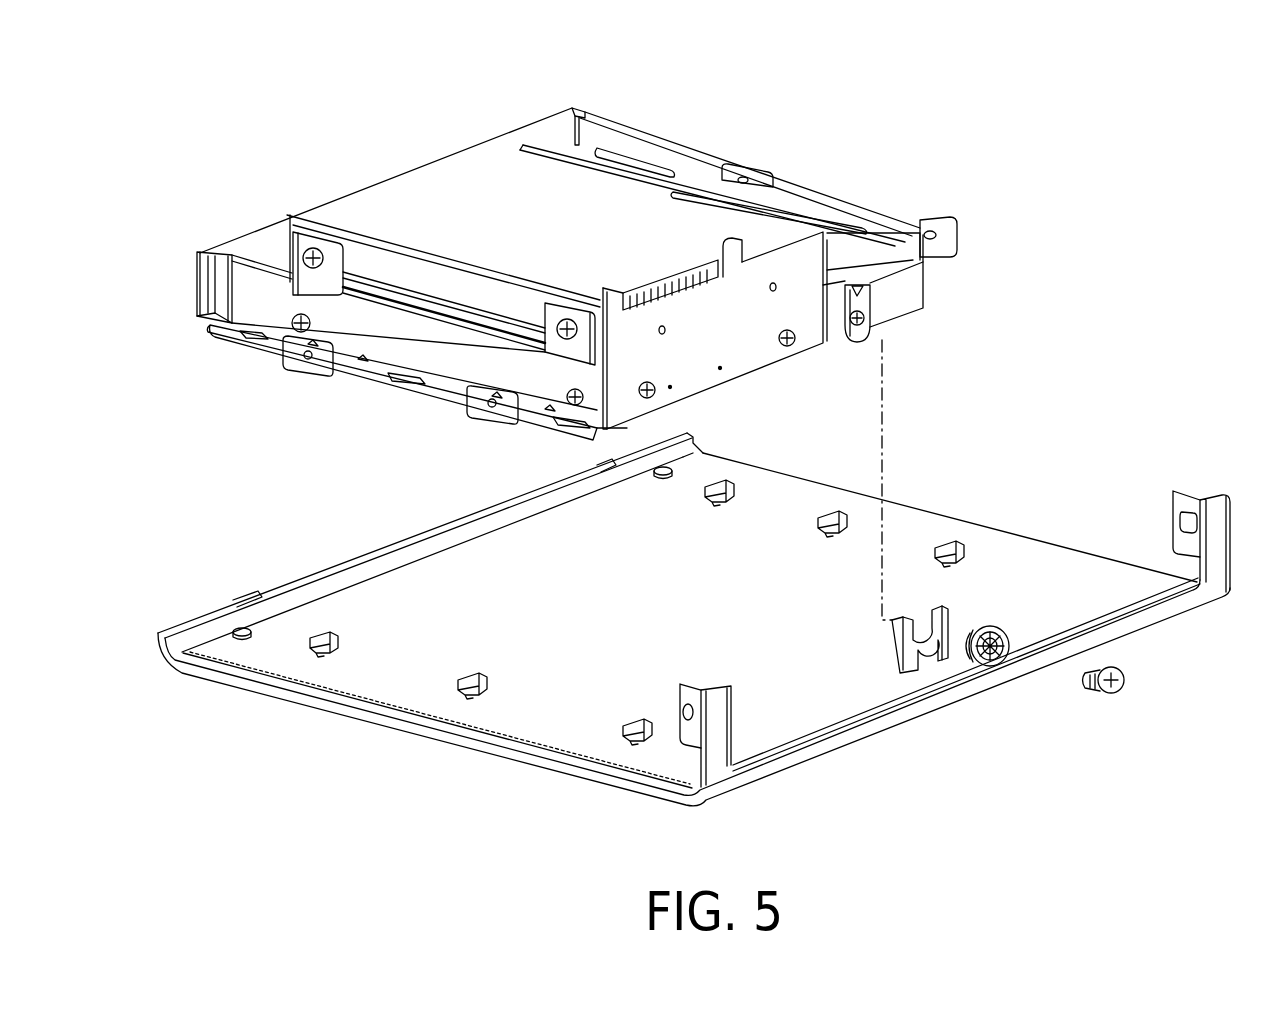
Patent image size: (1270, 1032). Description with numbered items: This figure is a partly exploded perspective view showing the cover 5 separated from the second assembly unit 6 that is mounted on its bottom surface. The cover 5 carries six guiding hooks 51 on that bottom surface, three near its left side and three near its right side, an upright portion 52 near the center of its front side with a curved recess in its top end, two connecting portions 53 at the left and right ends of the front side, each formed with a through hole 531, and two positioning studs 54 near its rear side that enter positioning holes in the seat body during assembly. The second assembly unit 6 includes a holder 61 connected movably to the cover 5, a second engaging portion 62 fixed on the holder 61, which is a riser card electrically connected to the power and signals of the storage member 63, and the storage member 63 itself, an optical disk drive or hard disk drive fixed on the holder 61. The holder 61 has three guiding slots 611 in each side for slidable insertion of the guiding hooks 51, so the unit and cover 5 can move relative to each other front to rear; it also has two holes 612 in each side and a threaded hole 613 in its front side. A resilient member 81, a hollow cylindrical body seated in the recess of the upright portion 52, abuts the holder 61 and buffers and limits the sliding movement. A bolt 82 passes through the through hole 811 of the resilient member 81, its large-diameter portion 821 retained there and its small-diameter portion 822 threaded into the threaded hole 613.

The cover 5 is at (432, 748).
The guiding hook 51 is at (724, 487).
The upright portion 52 is at (947, 610).
The connecting portion 53 is at (1177, 496).
The through hole 531 is at (1183, 528).
The positioning stud 54 is at (657, 474).
The second assembly unit 6 is at (338, 172).
The holder 61 is at (437, 390).
The guiding slot 611 is at (230, 342).
The hole 612 is at (922, 222).
The threaded hole 613 is at (870, 300).
The second engaging portion 62 is at (668, 283).
The storage member 63 is at (438, 190).
The resilient member 81 is at (1000, 630).
The through hole 811 is at (993, 664).
The bolt 82 is at (1122, 670).
The large-diameter portion 821 is at (1095, 688).
The small-diameter portion 822 is at (1083, 680).